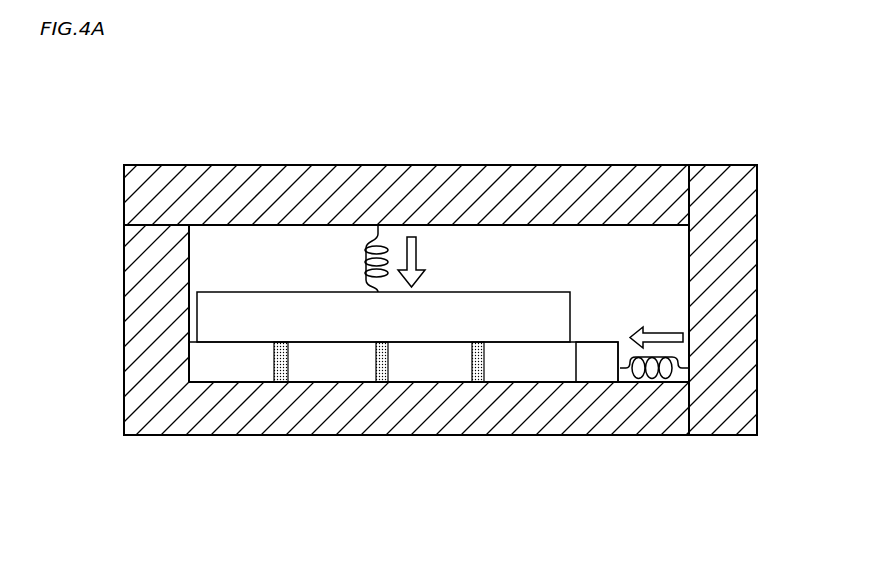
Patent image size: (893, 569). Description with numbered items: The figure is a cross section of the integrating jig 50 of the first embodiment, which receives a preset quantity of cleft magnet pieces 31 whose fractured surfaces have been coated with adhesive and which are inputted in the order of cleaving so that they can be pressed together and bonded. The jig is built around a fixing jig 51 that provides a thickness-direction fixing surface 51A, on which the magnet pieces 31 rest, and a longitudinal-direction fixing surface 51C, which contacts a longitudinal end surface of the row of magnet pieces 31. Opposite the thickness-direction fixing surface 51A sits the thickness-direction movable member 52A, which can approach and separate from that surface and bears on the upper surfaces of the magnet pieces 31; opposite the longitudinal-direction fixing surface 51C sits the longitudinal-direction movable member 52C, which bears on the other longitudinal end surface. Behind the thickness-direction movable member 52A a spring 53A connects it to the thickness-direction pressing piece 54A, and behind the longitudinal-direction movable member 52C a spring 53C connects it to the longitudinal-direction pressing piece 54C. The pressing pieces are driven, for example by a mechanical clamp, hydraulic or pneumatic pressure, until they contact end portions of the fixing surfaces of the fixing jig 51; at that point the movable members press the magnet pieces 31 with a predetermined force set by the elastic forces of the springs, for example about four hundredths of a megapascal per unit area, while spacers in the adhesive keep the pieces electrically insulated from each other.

The integrating jig 50 is at (612, 151).
The thickness-direction pressing piece 54A is at (293, 180).
The longitudinal-direction pressing piece 54C is at (725, 412).
The fixing jig 51 is at (478, 402).
The thickness-direction fixing surface 51A is at (236, 378).
The longitudinal-direction fixing surface 51C is at (194, 369).
The magnet pieces 31 is at (308, 367).
The thickness-direction movable member 52A is at (260, 310).
The longitudinal-direction movable member 52C is at (593, 367).
The spring 53A is at (365, 255).
The spring 53C is at (650, 380).